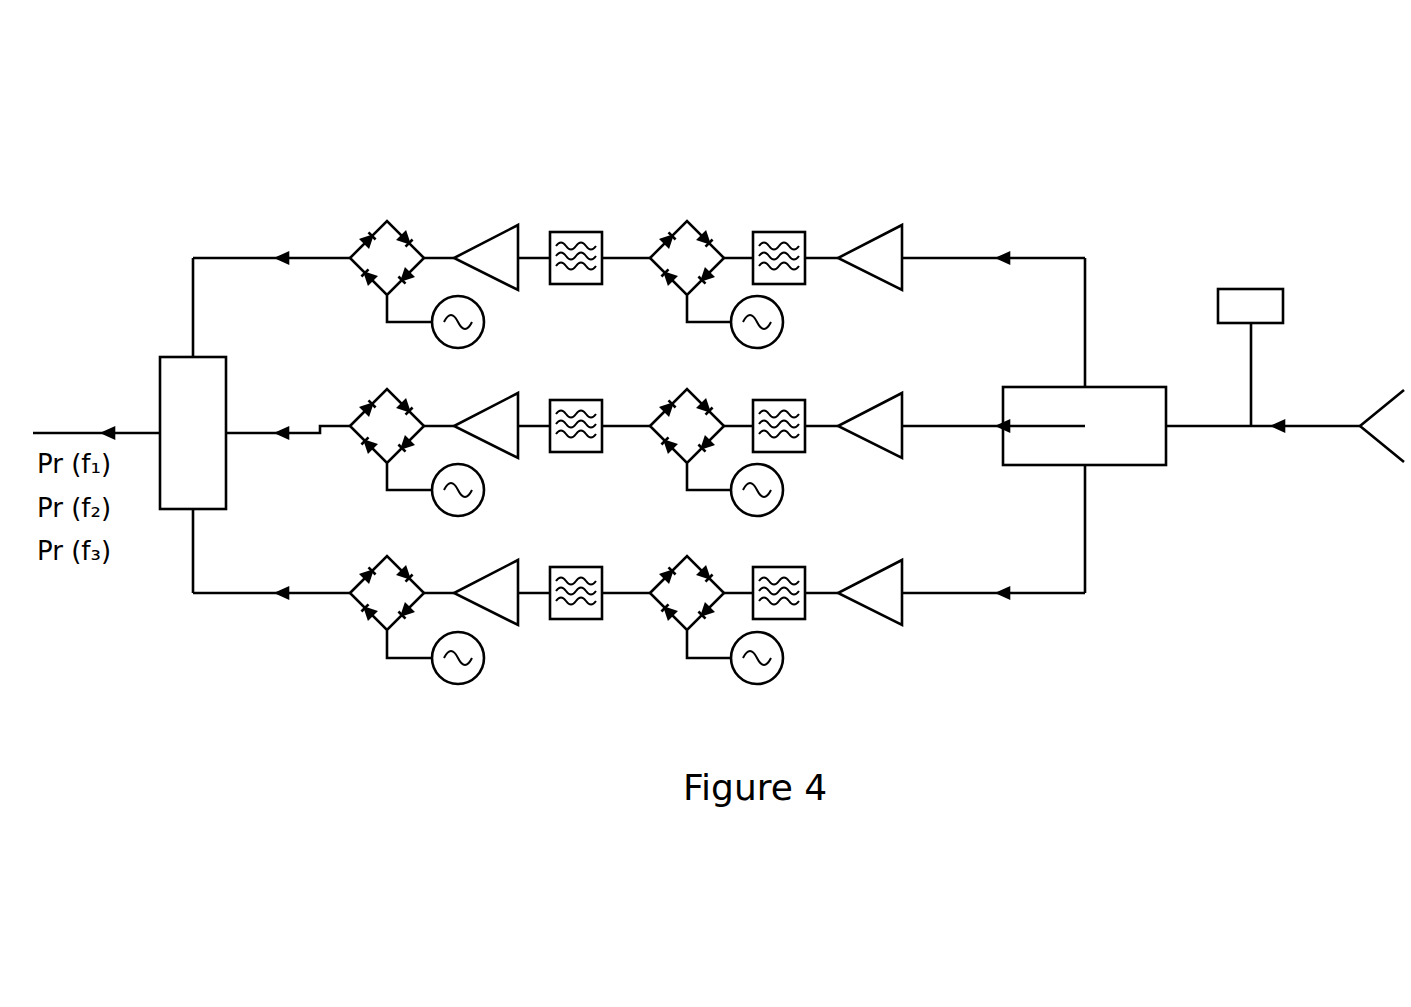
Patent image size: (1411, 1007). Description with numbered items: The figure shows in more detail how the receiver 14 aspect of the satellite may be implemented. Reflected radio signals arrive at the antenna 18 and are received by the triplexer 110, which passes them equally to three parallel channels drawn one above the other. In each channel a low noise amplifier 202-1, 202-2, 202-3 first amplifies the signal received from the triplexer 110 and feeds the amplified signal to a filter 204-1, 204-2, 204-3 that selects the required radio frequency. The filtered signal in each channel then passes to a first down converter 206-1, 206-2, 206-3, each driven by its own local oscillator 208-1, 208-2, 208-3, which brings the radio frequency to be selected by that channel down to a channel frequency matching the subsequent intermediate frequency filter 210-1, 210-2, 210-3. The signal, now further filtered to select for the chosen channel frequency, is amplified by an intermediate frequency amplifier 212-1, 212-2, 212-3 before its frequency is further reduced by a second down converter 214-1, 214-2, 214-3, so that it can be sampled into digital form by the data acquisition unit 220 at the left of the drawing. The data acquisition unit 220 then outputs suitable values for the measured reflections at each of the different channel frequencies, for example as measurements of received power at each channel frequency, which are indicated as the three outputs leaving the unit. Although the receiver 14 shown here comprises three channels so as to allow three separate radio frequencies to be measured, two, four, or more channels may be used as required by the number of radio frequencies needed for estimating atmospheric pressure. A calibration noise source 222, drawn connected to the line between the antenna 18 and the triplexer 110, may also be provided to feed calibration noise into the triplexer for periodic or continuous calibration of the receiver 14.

The receiver 14 is at (1132, 195).
The antenna 18 is at (1384, 404).
The triplexer 110 is at (1148, 465).
The low noise amplifier 202-1 is at (902, 228).
The low noise amplifier 202-2 is at (902, 396).
The low noise amplifier 202-3 is at (902, 563).
The filter 204-1 is at (806, 240).
The filter 204-2 is at (806, 408).
The filter 204-3 is at (806, 576).
The first down converter 206-1 is at (678, 230).
The first down converter 206-2 is at (678, 398).
The first down converter 206-3 is at (678, 565).
The local oscillator 208-1 is at (783, 322).
The local oscillator 208-2 is at (783, 490).
The local oscillator 208-3 is at (783, 658).
The intermediate frequency filter 210-1 is at (575, 232).
The intermediate frequency filter 210-2 is at (575, 400).
The intermediate frequency filter 210-3 is at (575, 567).
The intermediate frequency amplifier 212-1 is at (468, 246).
The intermediate frequency amplifier 212-2 is at (468, 414).
The intermediate frequency amplifier 212-3 is at (468, 581).
The second down converter 214-1 is at (379, 229).
The second down converter 214-2 is at (379, 397).
The second down converter 214-3 is at (379, 564).
The data acquisition unit 220 is at (159, 381).
The calibration noise source 222 is at (1284, 297).